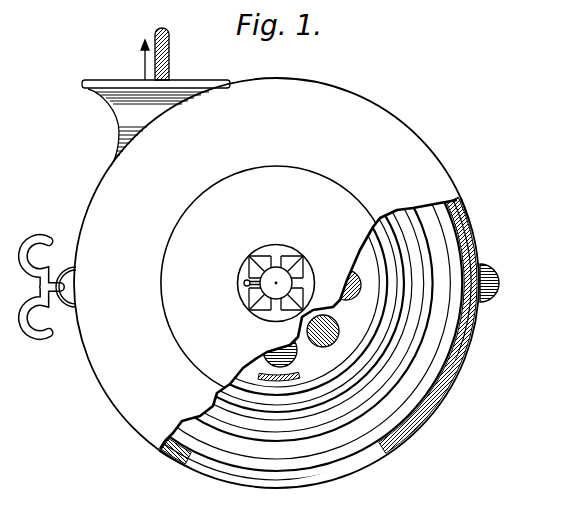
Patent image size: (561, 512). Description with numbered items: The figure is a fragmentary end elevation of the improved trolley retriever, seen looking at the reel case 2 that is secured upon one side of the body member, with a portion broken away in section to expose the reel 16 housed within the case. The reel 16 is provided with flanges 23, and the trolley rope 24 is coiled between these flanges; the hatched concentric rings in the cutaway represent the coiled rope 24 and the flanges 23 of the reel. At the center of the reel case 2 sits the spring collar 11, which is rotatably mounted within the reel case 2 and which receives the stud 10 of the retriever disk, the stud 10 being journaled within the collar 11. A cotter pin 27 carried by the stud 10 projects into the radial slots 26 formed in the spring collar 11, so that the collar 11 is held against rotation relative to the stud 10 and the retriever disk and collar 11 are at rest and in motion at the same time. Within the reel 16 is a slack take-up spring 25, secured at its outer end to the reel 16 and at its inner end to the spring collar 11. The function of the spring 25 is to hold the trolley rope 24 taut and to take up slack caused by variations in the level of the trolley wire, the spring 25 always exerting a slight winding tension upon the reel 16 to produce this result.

The reel case 2 is at (441, 163).
The stud 10 is at (277, 282).
The spring collar 11 is at (266, 351).
The reel 16 is at (424, 409).
The flanges 23 is at (420, 331).
The trolley rope 24 is at (155, 39).
The slack take-up spring 25 is at (344, 278).
The radial slots 26 is at (277, 258).
The cotter pin 27 is at (246, 285).